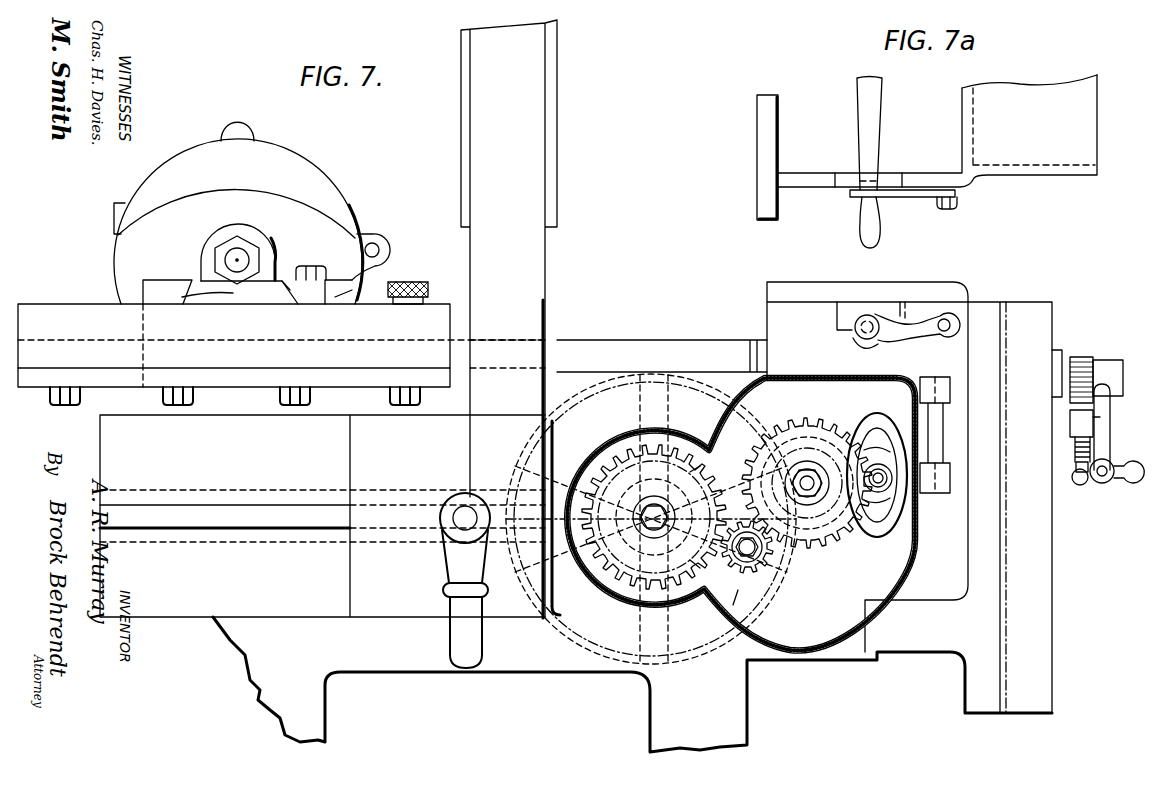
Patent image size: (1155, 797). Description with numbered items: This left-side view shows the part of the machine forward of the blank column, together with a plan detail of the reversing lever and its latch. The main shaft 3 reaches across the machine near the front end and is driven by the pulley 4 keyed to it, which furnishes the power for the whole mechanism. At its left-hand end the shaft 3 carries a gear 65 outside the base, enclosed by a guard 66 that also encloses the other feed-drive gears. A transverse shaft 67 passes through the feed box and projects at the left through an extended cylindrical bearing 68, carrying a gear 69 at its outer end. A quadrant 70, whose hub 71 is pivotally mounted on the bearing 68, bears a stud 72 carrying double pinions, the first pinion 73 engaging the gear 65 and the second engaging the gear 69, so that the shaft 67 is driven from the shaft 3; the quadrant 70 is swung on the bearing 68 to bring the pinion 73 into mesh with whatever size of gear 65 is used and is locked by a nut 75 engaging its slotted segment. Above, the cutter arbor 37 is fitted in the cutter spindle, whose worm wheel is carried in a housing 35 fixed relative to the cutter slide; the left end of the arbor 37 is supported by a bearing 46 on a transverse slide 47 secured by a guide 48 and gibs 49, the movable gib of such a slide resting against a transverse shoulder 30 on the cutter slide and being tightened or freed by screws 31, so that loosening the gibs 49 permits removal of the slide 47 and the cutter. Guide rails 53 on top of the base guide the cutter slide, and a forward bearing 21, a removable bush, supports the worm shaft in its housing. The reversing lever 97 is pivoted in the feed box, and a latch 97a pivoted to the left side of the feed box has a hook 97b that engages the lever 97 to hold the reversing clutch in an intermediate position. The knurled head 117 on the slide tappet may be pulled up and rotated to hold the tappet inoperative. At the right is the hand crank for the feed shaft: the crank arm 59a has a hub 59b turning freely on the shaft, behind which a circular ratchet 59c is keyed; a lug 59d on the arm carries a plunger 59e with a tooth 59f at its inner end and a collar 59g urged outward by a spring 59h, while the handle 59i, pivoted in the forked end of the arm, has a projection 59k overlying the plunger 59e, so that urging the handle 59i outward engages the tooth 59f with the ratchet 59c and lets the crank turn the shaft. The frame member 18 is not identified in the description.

In FIG. 7, the shaft 3 is at (652, 515).
In FIG. 7, the pulley 4 is at (592, 650).
In FIG. 7, the frame standard 18 is at (1038, 636).
In FIG. 7A, the frame standard 18 is at (1058, 168).
In FIG. 7, the forward bearing 21 is at (297, 283).
In FIG. 7, the transverse shoulder 30 is at (335, 297).
In FIG. 7, the screws 31 is at (305, 290).
In FIG. 7, the housing 35 is at (174, 220).
In FIG. 7, the cutter arbor 37 is at (239, 258).
In FIG. 7, the bearing 46 is at (264, 244).
In FIG. 7, the transverse slide 47 is at (190, 292).
In FIG. 7, the guide 48 is at (196, 292).
In FIG. 7, the gibs 49 is at (318, 297).
In FIG. 7, the guide rails 53 is at (651, 343).
In FIG. 7, the crank arm 59a is at (1102, 440).
In FIG. 7, the hub 59b is at (1105, 360).
In FIG. 7, the circular ratchet 59c is at (1080, 357).
In FIG. 7, the lug 59d is at (1098, 420).
In FIG. 7, the plunger 59e is at (1076, 466).
In FIG. 7, the tooth 59f is at (1070, 423).
In FIG. 7, the collar 59g is at (1075, 480).
In FIG. 7, the spring 59h is at (1075, 447).
In FIG. 7, the handle 59i is at (1112, 482).
In FIG. 7, the projection 59k is at (1087, 484).
In FIG. 7, the gear 65 is at (690, 580).
In FIG. 7, the guard 66 is at (792, 653).
In FIG. 7, the transverse shaft 67 is at (812, 492).
In FIG. 7, the extended cylindrical bearing 68 is at (805, 452).
In FIG. 7, the gear 69 is at (692, 470).
In FIG. 7, the quadrant 70 is at (778, 548).
In FIG. 7, the hub 71 is at (884, 524).
In FIG. 7, the stud 72 is at (750, 552).
In FIG. 7, the pinion 73 is at (738, 590).
In FIG. 7, the nut 75 is at (906, 510).
In FIG. 7, the reversing lever 97 is at (872, 320).
In FIG. 7A, the reversing lever 97 is at (880, 140).
In FIG. 7, the latch 97a is at (912, 320).
In FIG. 7A, the latch 97a is at (925, 196).
In FIG. 7, the hook 97b is at (862, 347).
In FIG. 7, the knurled head 117 is at (430, 288).